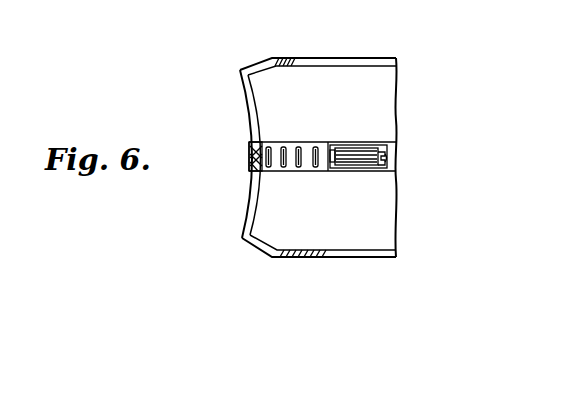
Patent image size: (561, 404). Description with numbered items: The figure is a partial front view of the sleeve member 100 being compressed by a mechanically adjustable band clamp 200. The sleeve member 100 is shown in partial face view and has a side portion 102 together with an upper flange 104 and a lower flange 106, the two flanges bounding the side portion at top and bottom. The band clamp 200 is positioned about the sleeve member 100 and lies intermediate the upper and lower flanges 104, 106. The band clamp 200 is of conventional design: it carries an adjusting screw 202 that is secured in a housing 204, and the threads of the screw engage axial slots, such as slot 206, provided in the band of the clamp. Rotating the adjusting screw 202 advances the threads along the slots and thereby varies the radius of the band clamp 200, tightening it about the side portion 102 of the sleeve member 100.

The sleeve member 100 is at (244, 127).
The side portion 102 is at (251, 194).
The upper flange 104 is at (252, 63).
The lower flange 106 is at (258, 249).
The band clamp 200 is at (386, 145).
The adjusting screw 202 is at (383, 166).
The housing 204 is at (358, 153).
The slot 206 is at (312, 142).